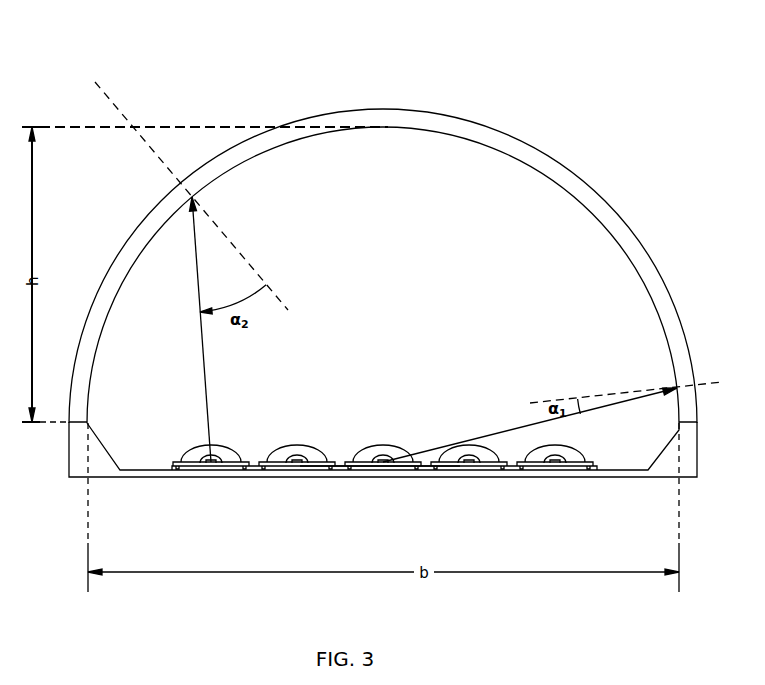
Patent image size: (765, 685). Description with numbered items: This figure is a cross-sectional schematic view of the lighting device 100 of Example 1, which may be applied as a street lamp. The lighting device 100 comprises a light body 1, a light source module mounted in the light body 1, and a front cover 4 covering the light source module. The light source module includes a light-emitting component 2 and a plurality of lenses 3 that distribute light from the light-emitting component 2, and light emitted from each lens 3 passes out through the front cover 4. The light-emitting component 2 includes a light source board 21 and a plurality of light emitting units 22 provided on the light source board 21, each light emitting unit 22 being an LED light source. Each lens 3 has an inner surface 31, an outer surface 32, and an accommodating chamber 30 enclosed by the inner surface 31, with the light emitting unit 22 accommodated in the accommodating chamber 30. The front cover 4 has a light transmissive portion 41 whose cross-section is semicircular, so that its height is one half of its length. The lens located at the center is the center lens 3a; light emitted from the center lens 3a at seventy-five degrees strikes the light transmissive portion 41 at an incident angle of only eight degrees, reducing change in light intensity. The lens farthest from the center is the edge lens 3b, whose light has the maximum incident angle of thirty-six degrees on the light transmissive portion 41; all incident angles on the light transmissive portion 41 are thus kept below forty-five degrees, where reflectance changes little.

The lighting device 100 is at (247, 90).
The light body 1 is at (97, 453).
The light-emitting component 2 is at (344, 471).
The light source board 21 is at (377, 467).
The light emitting unit 22 is at (384, 463).
The lens 3 is at (204, 504).
The center lens 3a is at (397, 463).
The edge lens 3b is at (191, 465).
The accommodating chamber 30 is at (212, 465).
The inner surface 31 is at (219, 457).
The outer surface 32 is at (234, 463).
The front cover 4 is at (412, 120).
The light transmissive portion 41 is at (468, 137).